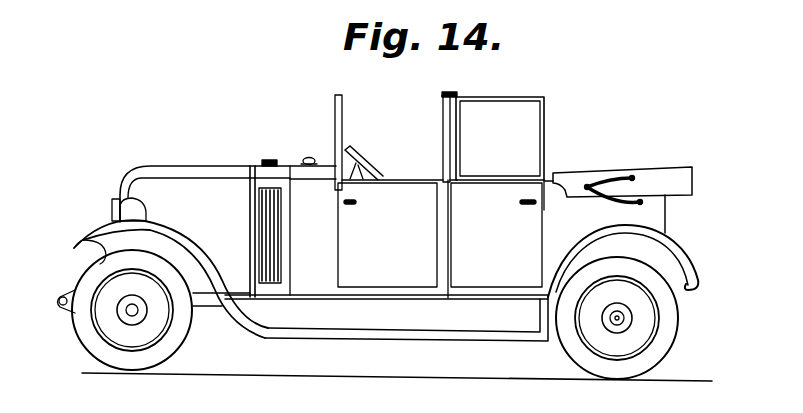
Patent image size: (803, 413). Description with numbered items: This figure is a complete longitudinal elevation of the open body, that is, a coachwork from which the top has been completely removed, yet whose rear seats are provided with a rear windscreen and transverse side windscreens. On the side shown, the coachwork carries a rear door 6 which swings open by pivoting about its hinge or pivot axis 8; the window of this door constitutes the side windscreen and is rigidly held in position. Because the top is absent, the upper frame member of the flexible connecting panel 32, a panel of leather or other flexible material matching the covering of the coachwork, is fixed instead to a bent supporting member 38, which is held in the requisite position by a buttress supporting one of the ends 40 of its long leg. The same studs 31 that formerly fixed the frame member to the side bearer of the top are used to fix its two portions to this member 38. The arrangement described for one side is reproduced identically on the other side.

The rear door 6 is at (505, 199).
The pivot axis of rear door 8 is at (452, 245).
The studs 31 is at (452, 95).
The flexible panel 32 is at (448, 140).
The bent supporting member 38 is at (445, 96).
The end of long leg of supporting member 40 is at (517, 131).